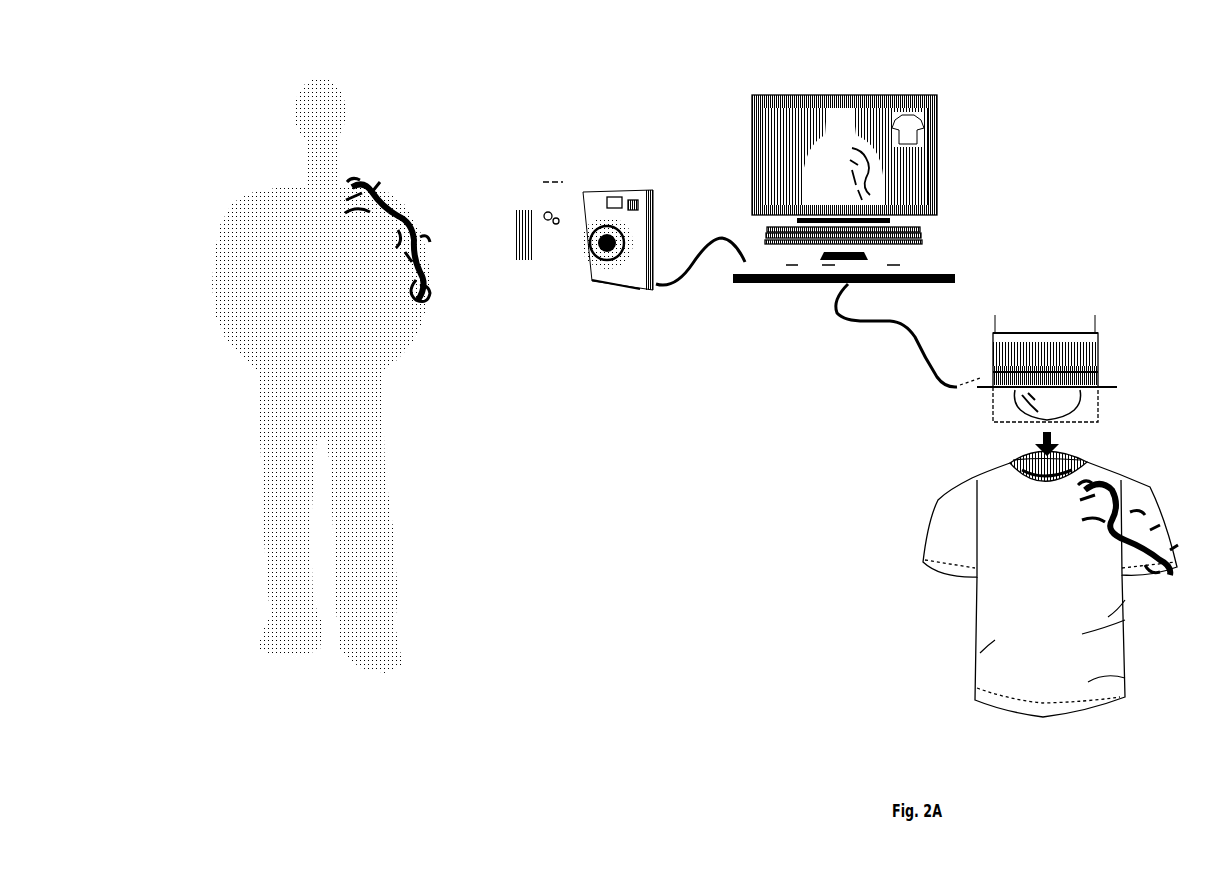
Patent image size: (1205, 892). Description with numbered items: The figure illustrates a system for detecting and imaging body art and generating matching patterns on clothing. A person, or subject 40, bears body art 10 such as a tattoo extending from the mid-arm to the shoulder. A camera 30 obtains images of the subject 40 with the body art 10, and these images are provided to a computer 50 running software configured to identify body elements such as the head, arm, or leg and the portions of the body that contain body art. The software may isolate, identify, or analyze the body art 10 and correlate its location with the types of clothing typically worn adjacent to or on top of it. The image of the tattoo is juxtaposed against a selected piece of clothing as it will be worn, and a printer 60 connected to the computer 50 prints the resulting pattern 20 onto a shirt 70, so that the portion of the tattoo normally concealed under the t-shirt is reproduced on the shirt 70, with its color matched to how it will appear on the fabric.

The body art 10 is at (378, 190).
The pattern 20 is at (1120, 497).
The camera 30 is at (571, 183).
The subject 40 is at (228, 197).
The computer 50 is at (841, 95).
The printer 60 is at (1102, 333).
The shirt 70 is at (938, 492).